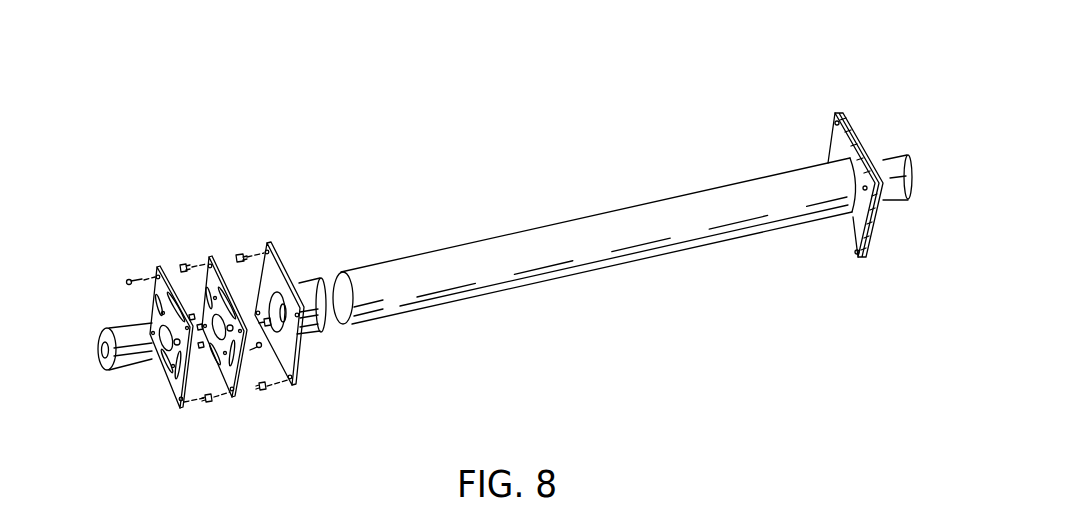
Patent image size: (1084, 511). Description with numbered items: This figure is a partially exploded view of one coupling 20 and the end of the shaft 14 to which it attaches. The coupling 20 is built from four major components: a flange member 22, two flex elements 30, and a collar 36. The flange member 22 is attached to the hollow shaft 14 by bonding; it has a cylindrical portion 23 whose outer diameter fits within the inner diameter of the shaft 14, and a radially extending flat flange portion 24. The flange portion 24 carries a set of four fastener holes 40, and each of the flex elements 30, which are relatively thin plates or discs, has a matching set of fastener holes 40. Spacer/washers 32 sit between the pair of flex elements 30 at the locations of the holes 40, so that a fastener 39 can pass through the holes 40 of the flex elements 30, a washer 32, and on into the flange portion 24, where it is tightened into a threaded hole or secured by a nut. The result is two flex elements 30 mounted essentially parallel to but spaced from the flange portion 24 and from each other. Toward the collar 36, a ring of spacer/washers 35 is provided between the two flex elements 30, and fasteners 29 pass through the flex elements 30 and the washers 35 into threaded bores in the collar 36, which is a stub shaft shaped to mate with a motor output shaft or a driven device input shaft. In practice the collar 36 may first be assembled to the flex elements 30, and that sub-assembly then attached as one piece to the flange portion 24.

The shaft 14 is at (531, 220).
The coupling 20 is at (232, 208).
The flange member 22 is at (309, 271).
The cylindrical portion 23 is at (321, 325).
The flange portion 24 is at (297, 373).
The fastener 29 is at (262, 350).
The flex element 30 is at (152, 264).
The spacer/washer 32 is at (185, 262).
The spacer/washer 35 is at (193, 396).
The collar 36 is at (110, 372).
The fastener 39 is at (126, 279).
The fastener hole 40 is at (178, 404).